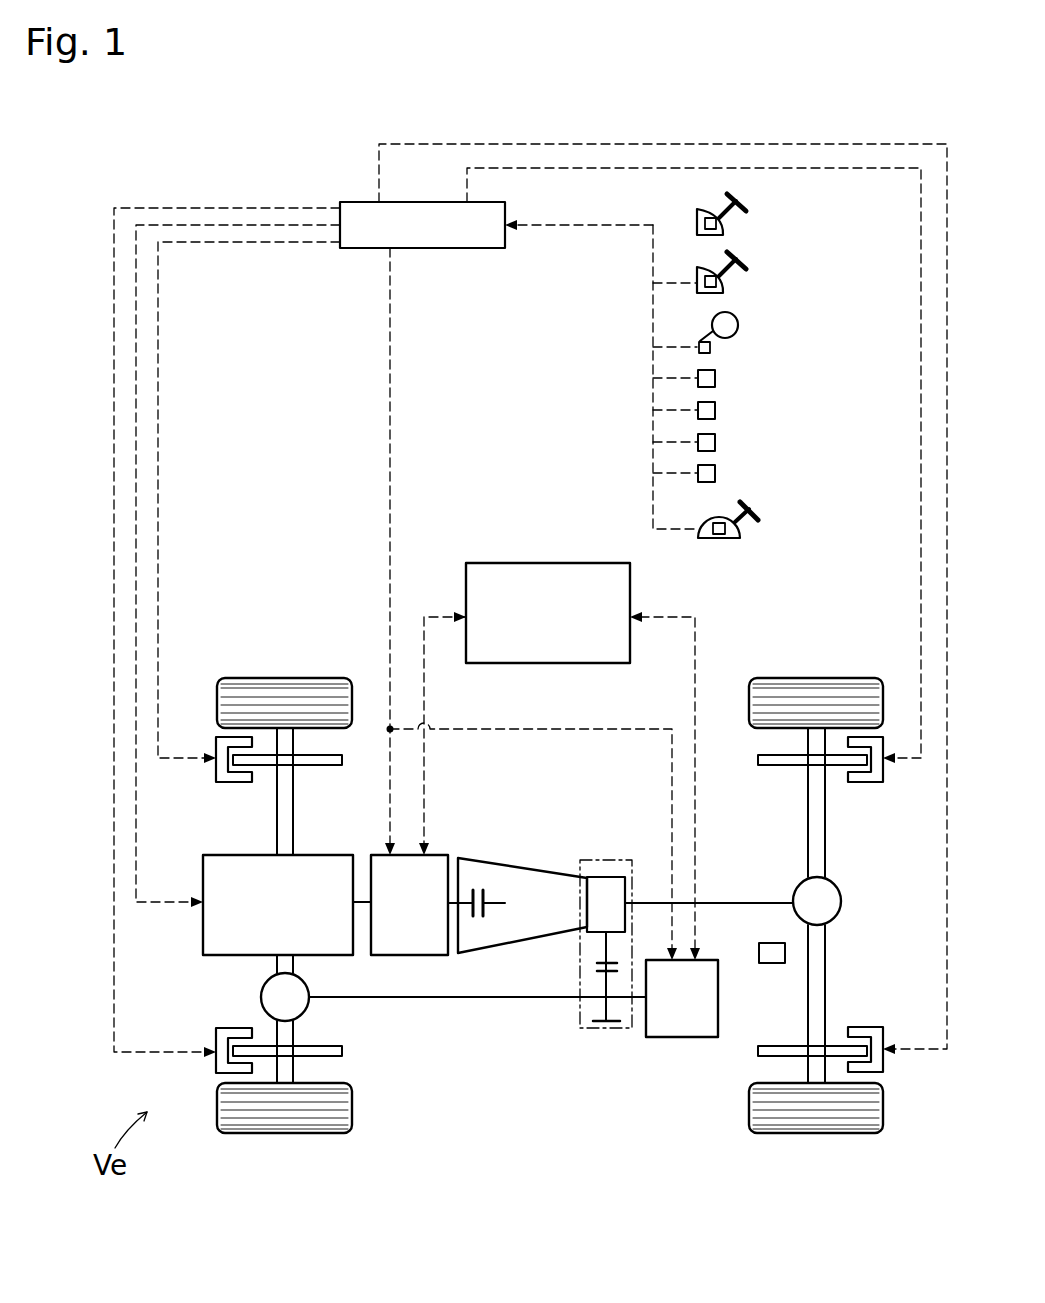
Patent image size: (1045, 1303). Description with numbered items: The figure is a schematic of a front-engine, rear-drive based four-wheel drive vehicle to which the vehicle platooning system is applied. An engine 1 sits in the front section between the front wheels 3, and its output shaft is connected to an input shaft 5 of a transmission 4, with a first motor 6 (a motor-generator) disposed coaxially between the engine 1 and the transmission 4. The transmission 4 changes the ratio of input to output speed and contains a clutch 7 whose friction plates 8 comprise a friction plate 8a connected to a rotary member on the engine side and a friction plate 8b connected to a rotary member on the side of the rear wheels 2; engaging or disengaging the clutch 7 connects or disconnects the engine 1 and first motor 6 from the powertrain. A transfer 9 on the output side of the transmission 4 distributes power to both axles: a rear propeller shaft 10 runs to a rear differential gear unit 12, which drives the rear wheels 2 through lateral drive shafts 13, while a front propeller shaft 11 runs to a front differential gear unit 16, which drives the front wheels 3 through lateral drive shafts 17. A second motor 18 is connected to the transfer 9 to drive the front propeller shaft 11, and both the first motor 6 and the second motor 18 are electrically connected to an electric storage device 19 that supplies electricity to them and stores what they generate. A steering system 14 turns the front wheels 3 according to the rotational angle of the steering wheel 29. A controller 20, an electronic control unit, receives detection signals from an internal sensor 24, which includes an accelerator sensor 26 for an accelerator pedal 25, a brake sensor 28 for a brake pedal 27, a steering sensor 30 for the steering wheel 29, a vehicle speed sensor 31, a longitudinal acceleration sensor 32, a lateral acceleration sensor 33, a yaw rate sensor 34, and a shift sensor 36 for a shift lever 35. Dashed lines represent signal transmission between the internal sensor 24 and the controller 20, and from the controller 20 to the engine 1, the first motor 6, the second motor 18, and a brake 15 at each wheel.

The engine 1 is at (203, 934).
The rear wheels 2 is at (815, 676).
The front wheels 3 is at (298, 676).
The transmission 4 is at (523, 930).
The input shaft 5 is at (467, 905).
The first motor 6 is at (418, 957).
The clutch 7 is at (505, 880).
The friction plate 8 is at (481, 834).
The friction plate 8a is at (473, 892).
The friction plate 8b is at (485, 892).
The transfer 9 is at (604, 1030).
The rear propeller shaft 10 is at (727, 905).
The front propeller shaft 11 is at (440, 1000).
The rear differential gear unit 12 is at (842, 900).
The drive shafts 13 is at (807, 817).
The steering system 14 is at (773, 965).
The brake 15 is at (232, 784).
The front differential gear unit 16 is at (262, 993).
The drive shafts 17 is at (295, 812).
The second motor 18 is at (676, 1039).
The electric storage device 19 is at (556, 665).
The controller 20 is at (436, 250).
The internal sensor 24 is at (630, 322).
The accelerator pedal 25 is at (746, 208).
The accelerator sensor 26 is at (722, 232).
The brake pedal 27 is at (746, 266).
The brake sensor 28 is at (722, 290).
The steering wheel 29 is at (738, 322).
The steering sensor 30 is at (712, 349).
The vehicle speed sensor 31 is at (716, 378).
The longitudinal acceleration sensor 32 is at (716, 410).
The lateral acceleration sensor 33 is at (716, 442).
The yaw rate sensor 34 is at (716, 473).
The shift lever 35 is at (755, 506).
The shift sensor 36 is at (720, 540).